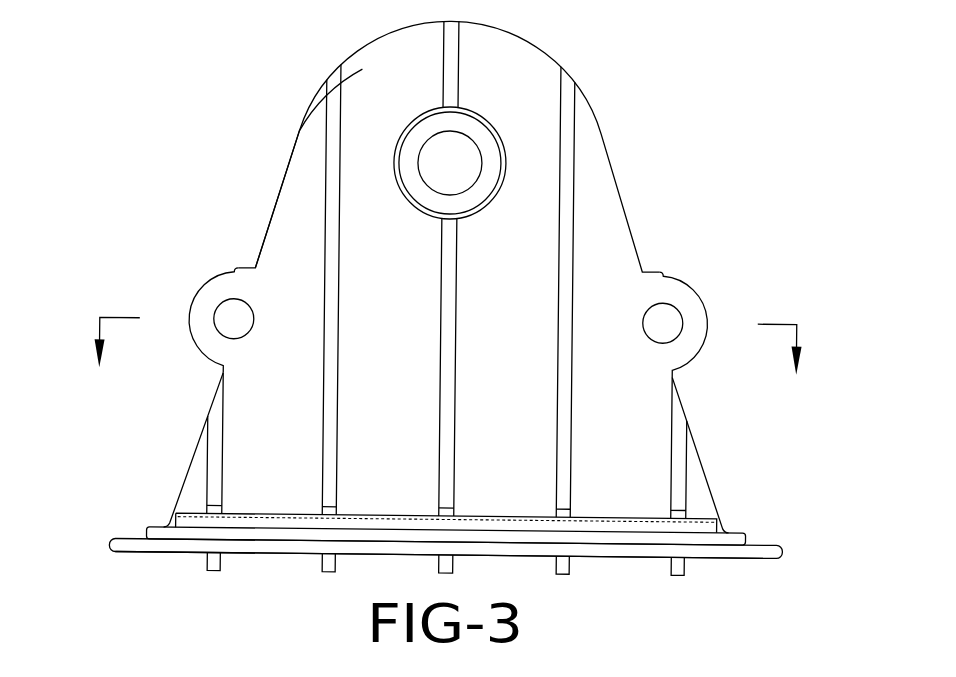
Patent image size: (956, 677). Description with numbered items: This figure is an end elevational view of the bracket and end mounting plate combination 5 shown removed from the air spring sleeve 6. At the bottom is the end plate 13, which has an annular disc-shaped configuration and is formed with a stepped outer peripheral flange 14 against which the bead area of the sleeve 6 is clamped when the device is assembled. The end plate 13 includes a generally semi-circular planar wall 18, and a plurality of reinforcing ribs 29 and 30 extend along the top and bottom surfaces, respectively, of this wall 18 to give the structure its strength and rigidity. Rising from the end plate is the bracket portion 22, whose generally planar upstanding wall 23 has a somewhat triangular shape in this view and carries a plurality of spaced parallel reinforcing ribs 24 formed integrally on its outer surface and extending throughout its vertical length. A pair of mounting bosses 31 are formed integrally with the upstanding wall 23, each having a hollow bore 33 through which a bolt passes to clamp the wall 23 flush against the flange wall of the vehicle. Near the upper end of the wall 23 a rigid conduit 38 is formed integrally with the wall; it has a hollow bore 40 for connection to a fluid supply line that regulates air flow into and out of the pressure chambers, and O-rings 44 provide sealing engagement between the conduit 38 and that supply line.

The bracket and end mounting plate combination 5 is at (637, 152).
The sleeve 6 is at (449, 361).
The end plate 13 is at (167, 548).
The stepped outer peripheral flange 14 is at (128, 538).
The semi-circular planar wall 18 is at (627, 520).
The bracket portion 22 is at (531, 57).
The upstanding wall 23 is at (301, 162).
The reinforcing ribs 24 is at (330, 200).
The reinforcing ribs 29 is at (330, 506).
The reinforcing ribs 30 is at (323, 573).
The mounting bosses 31 is at (226, 274).
The hollow bore 33 is at (230, 315).
The rigid conduit 38 is at (461, 121).
The hollow bore 40 is at (464, 155).
The O-rings 44 is at (432, 216).